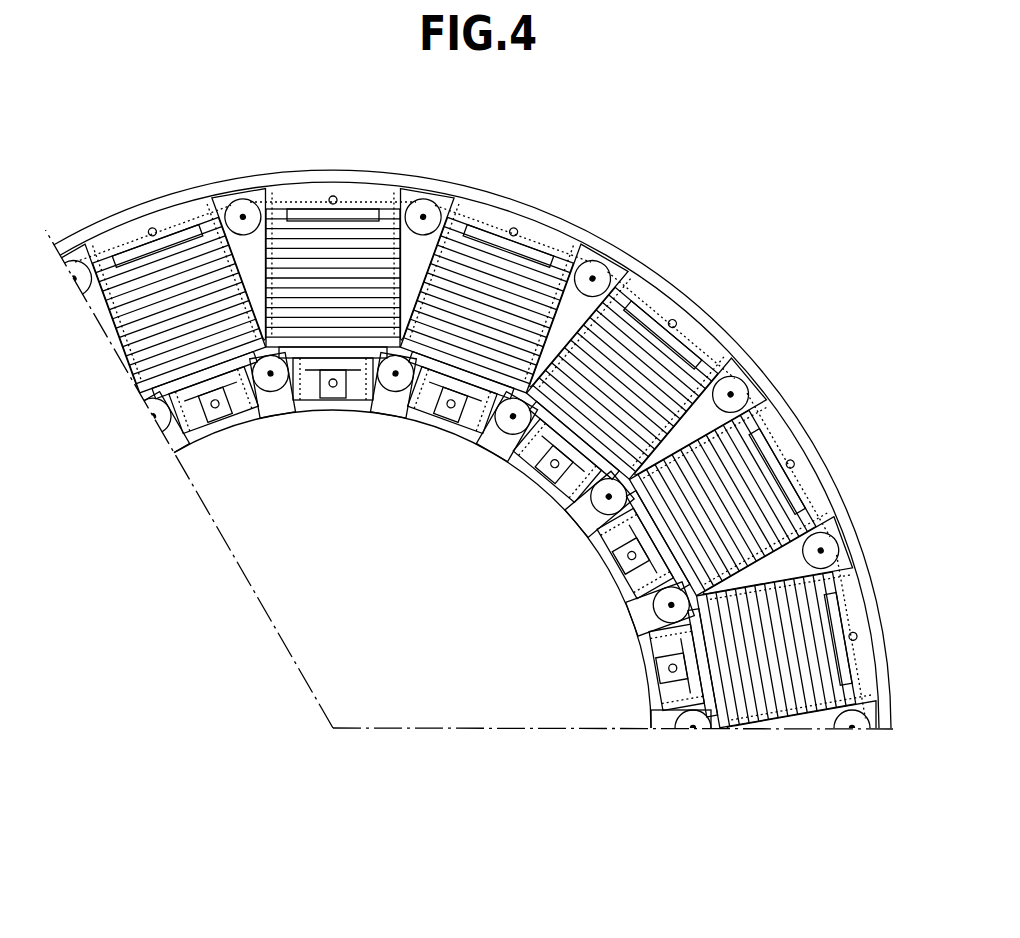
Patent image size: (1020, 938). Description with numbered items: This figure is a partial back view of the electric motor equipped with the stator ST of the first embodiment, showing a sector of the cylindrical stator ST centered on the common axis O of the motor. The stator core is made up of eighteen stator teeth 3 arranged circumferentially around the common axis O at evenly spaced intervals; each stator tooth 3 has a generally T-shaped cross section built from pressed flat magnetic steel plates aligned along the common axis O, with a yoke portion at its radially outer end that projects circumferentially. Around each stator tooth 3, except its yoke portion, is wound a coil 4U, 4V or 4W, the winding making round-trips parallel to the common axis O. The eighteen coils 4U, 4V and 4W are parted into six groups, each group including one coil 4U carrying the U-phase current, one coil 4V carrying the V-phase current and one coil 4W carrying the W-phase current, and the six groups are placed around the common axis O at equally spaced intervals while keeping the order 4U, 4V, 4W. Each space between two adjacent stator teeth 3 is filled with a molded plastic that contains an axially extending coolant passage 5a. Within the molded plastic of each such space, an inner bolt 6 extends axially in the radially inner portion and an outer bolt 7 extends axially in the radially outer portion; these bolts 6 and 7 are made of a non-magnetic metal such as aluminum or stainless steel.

The stator tooth 3 is at (314, 197).
The coil 4U is at (142, 405).
The coil 4V is at (347, 312).
The coil 4W is at (472, 350).
The coolant passage 5a is at (193, 208).
The inner bolt 6 is at (171, 450).
The outer bolt 7 is at (78, 266).
The stator ST is at (694, 222).
The common axis O is at (329, 730).